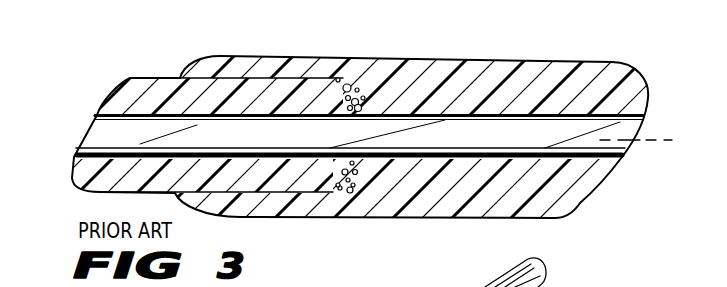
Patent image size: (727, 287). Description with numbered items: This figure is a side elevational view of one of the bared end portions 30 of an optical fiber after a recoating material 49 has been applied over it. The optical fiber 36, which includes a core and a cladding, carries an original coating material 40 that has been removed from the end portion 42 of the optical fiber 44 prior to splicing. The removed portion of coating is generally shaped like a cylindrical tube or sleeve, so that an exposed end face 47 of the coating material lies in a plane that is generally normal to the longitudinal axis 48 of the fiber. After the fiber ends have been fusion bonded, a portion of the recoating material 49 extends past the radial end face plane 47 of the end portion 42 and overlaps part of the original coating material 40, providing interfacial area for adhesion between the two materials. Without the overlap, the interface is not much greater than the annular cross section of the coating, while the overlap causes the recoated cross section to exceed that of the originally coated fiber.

The optical fiber 36 is at (92, 133).
The coating material 40 is at (142, 85).
The end portion 42 is at (475, 163).
The optical fiber 44 is at (77, 185).
The exposed end face 47 is at (360, 185).
The longitudinal axis 48 is at (643, 139).
The recoating material 49 is at (253, 60).
The end portion 30 is at (421, 278).